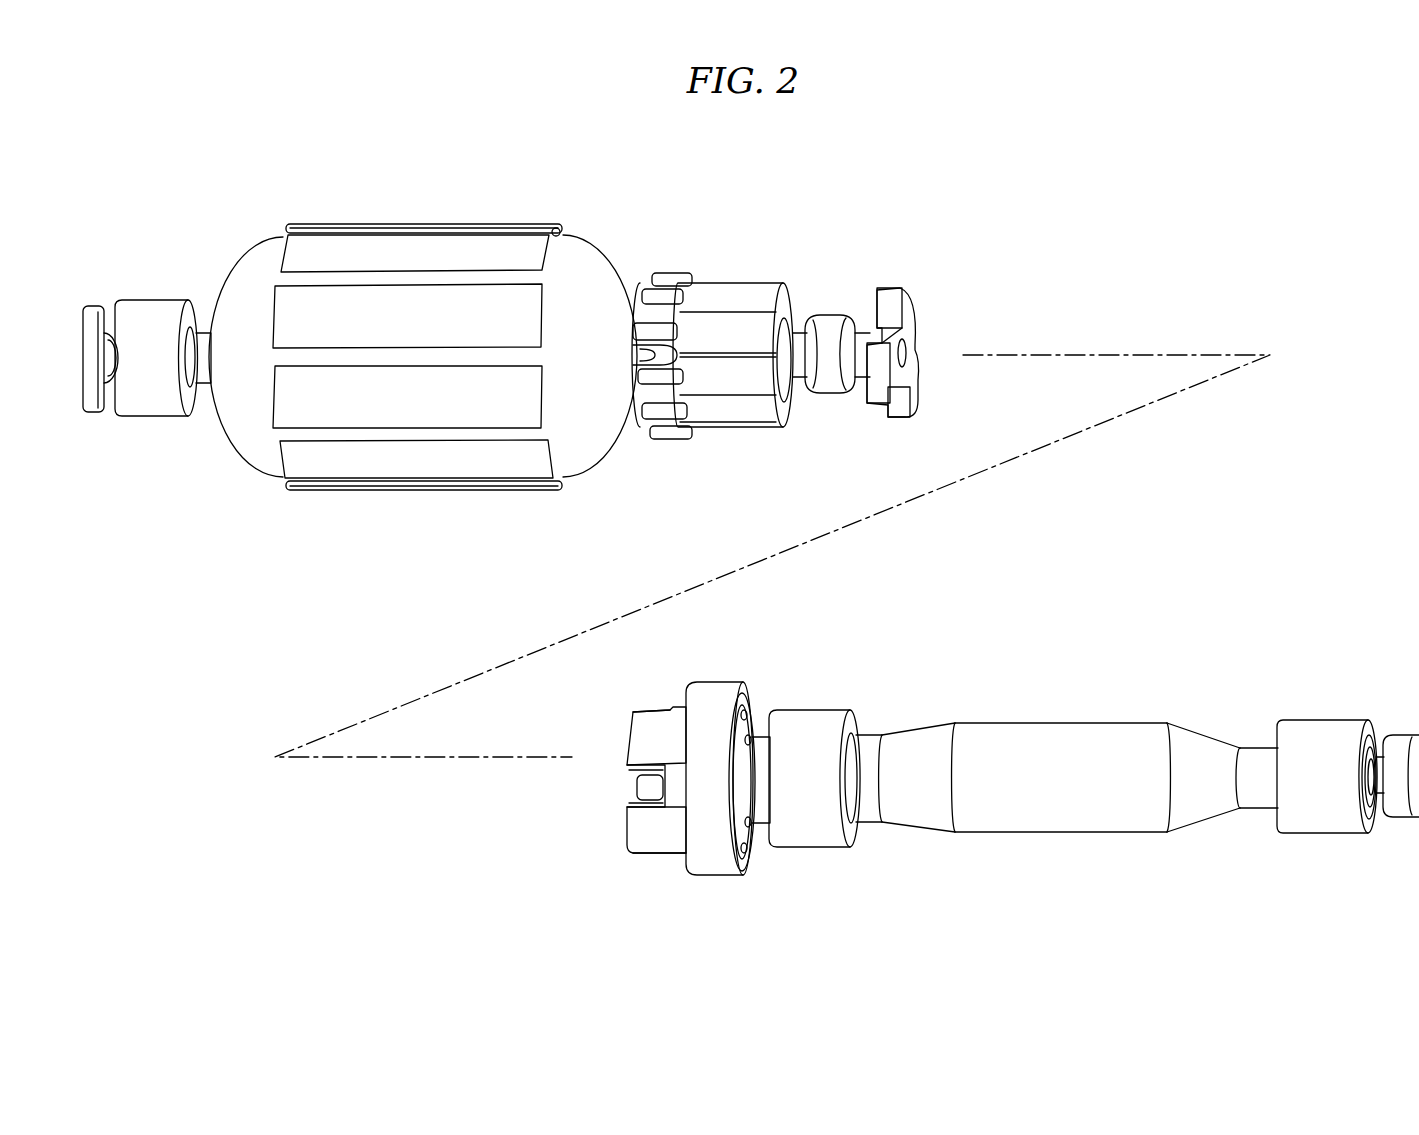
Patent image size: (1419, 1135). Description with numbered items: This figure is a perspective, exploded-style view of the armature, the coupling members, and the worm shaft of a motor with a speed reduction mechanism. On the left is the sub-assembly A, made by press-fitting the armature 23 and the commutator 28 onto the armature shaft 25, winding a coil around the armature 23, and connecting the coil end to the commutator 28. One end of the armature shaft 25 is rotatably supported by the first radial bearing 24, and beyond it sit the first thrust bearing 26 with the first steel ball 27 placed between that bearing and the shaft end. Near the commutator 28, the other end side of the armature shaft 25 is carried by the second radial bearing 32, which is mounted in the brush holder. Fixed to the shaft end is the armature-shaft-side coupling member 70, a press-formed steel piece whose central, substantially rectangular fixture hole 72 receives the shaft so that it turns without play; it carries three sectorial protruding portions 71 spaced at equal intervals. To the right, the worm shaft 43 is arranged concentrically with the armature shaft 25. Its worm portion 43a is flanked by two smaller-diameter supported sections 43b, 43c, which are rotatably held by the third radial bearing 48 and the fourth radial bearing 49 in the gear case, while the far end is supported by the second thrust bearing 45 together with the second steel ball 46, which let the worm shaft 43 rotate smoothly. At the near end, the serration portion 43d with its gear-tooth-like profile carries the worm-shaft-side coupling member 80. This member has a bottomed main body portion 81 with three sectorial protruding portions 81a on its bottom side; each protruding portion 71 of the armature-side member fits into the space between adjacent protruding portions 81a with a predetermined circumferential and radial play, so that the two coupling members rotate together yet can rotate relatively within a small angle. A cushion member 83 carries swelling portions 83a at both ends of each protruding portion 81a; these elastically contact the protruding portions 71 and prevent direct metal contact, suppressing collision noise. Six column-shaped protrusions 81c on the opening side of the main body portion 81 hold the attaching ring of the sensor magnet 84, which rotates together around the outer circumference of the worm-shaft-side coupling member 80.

The sub-assembly A is at (467, 215).
The armature 23 is at (403, 252).
The first radial bearing 24 is at (148, 338).
The armature shaft 25 is at (203, 347).
The first thrust bearing 26 is at (102, 387).
The first steel ball 27 is at (107, 310).
The commutator 28 is at (718, 410).
The second radial bearing 32 is at (826, 338).
The armature-shaft-side coupling member 70 is at (939, 336).
The protruding portions 71 is at (890, 300).
The fixture hole 72 is at (910, 353).
The worm-shaft-side coupling member 80 is at (635, 779).
The main body portion 81 is at (680, 803).
The protruding portions 81a is at (648, 733).
The protrusions 81c is at (750, 722).
The cushion member 83 is at (626, 787).
The swelling portions 83a is at (627, 767).
The sensor magnet 84 is at (703, 735).
The worm shaft 43 is at (1012, 767).
The worm portion 43a is at (1040, 750).
The supported section 43b is at (1253, 767).
The supported section 43c is at (862, 760).
The serration portion 43d is at (747, 797).
The fourth radial bearing 49 is at (802, 745).
The third radial bearing 48 is at (1317, 757).
The second thrust bearing 45 is at (1398, 763).
The second steel ball 46 is at (1380, 778).